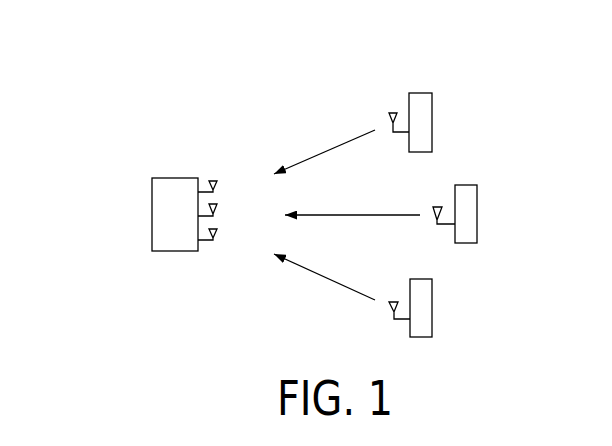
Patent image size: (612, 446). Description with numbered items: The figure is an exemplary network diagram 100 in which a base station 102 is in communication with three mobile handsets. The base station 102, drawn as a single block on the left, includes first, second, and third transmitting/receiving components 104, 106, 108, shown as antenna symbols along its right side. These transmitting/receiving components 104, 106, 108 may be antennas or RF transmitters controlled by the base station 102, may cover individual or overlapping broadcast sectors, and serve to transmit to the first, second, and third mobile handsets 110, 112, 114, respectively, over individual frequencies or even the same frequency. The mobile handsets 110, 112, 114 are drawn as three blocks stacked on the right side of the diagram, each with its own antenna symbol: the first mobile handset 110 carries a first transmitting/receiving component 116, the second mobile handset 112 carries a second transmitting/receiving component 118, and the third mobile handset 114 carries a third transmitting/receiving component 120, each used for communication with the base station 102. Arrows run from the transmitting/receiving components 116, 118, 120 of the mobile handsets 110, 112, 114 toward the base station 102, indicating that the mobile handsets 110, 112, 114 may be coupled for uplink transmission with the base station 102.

The network diagram 100 is at (86, 127).
The base station 102 is at (163, 252).
The first transmitting/receiving component 104 is at (213, 192).
The second transmitting/receiving component 106 is at (213, 216).
The third transmitting/receiving component 108 is at (213, 240).
The first mobile handset 110 is at (432, 120).
The second mobile handset 112 is at (477, 212).
The third mobile handset 114 is at (432, 308).
The first transmitting/receiving component 116 is at (393, 112).
The second transmitting/receiving component 118 is at (437, 206).
The third transmitting/receiving component 120 is at (390, 306).